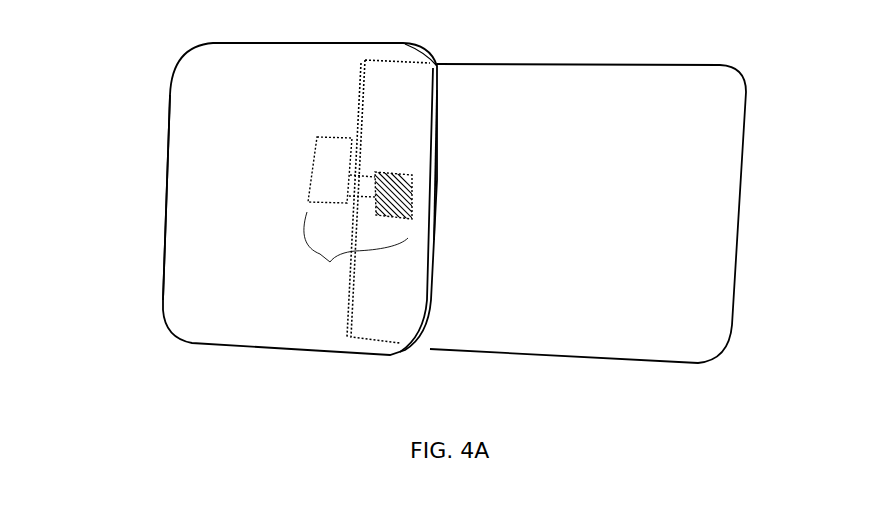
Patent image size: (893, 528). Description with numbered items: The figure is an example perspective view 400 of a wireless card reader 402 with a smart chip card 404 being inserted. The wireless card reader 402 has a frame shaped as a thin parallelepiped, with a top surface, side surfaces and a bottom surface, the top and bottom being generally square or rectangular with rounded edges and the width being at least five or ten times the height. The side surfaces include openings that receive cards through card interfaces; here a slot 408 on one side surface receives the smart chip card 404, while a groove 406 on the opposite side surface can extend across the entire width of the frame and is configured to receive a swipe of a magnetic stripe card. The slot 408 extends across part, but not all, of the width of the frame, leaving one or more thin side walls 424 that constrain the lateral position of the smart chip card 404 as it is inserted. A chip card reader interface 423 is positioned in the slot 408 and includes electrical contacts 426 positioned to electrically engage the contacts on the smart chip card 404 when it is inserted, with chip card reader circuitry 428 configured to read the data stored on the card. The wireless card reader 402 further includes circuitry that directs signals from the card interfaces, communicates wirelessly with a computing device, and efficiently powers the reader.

The perspective view 400 is at (82, 444).
The wireless card reader 402 is at (293, 43).
The smart chip card 404 is at (660, 65).
The groove 406 is at (165, 221).
The slot 408 is at (441, 182).
The chip card reader interface 423 is at (350, 252).
The thin side walls 424 is at (362, 97).
The electrical contacts 426 is at (385, 172).
The chip card reader circuitry 428 is at (323, 182).